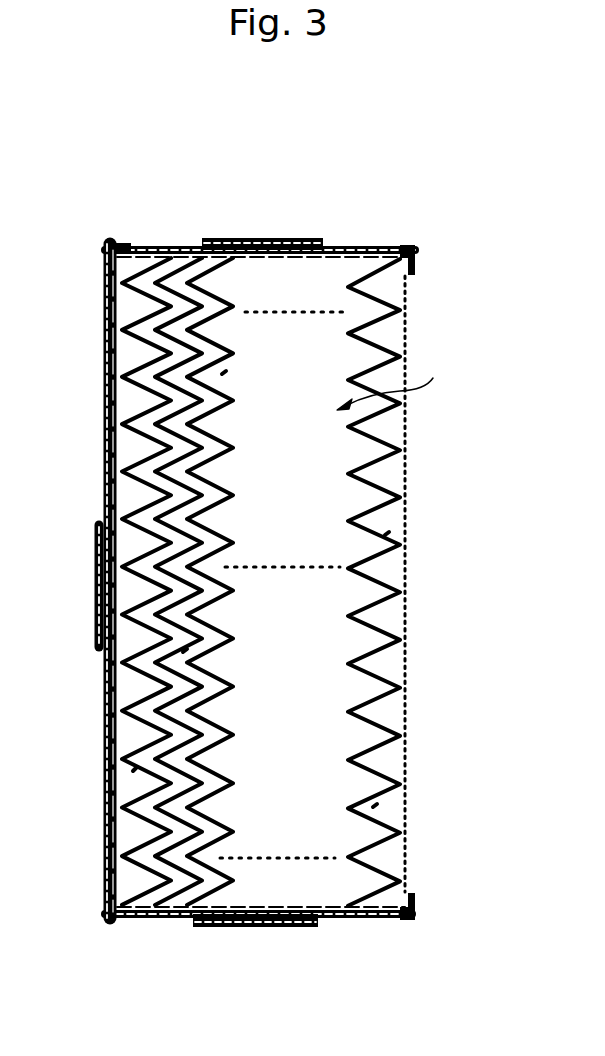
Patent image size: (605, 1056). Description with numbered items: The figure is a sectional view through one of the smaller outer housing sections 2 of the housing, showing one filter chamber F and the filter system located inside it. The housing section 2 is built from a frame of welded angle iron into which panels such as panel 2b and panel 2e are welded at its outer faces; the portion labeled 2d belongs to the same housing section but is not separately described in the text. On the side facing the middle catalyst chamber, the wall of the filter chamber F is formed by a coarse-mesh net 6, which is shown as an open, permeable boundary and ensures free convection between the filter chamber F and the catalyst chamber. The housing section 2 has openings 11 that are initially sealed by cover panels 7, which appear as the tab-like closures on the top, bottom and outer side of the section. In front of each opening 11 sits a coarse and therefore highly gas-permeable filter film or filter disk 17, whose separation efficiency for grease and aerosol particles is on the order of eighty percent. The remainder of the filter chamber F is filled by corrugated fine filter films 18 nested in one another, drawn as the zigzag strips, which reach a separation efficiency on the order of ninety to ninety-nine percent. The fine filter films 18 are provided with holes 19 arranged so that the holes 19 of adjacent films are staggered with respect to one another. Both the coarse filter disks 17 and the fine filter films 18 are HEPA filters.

The housing section 2 is at (148, 247).
The panel 2b is at (358, 920).
The housing top corner portion 2d is at (366, 247).
The panel 2e is at (104, 733).
The coarse-mesh net 6 is at (404, 722).
The cover panel 7 is at (229, 247).
The opening 11 is at (277, 247).
The coarse filter film or filter disk 17 is at (127, 304).
The fine filter film 18 is at (130, 457).
The hole 19 is at (225, 372).
The filter chamber F is at (392, 381).